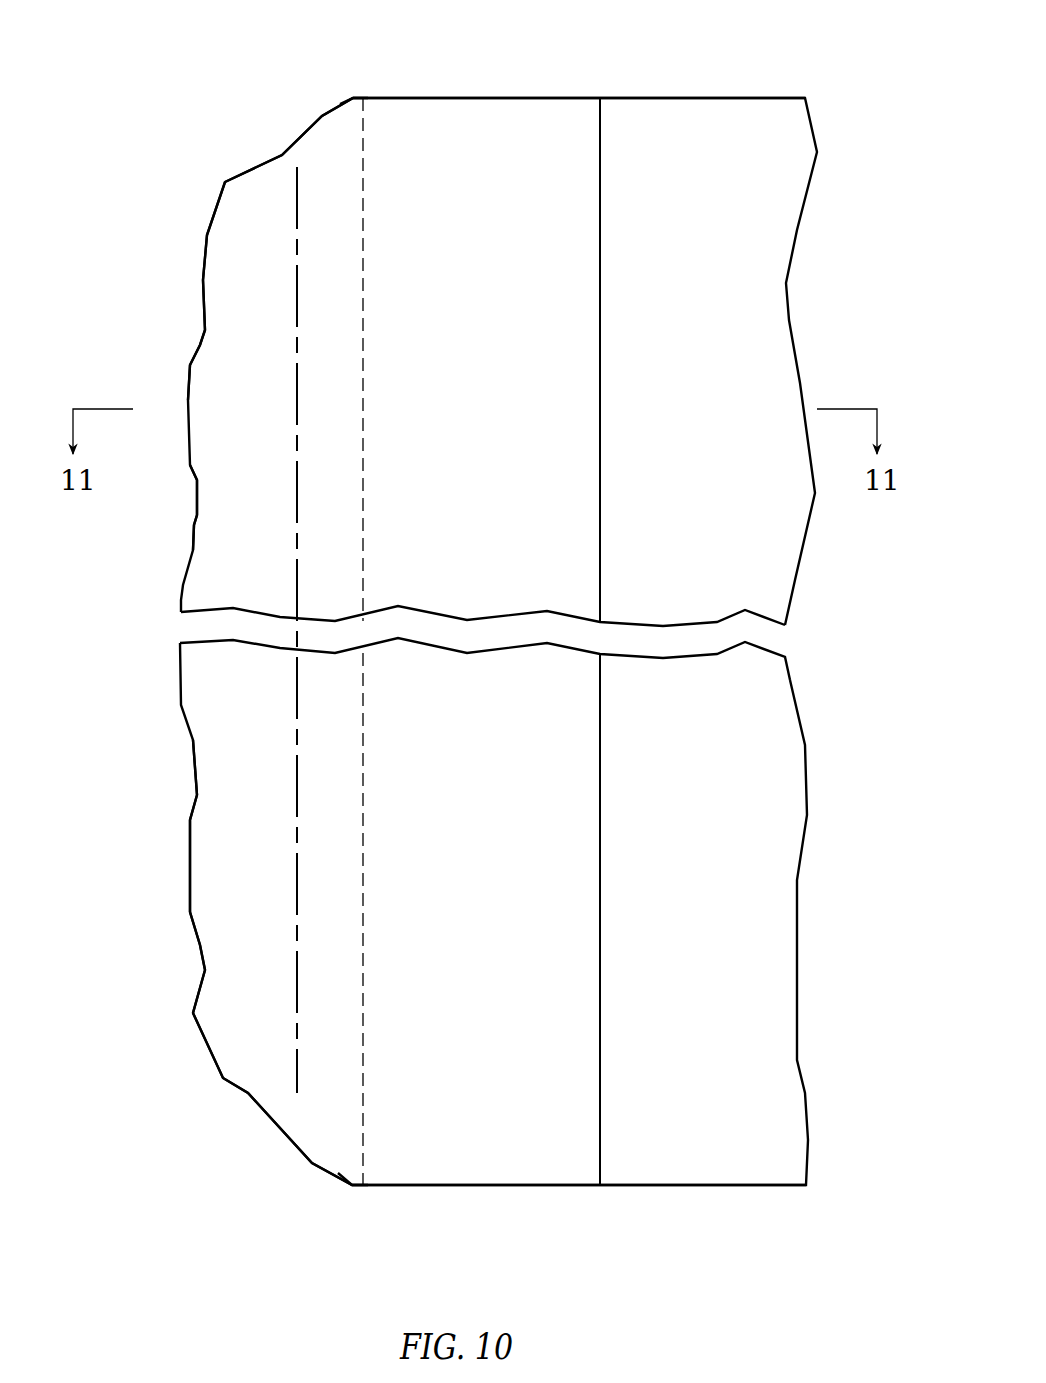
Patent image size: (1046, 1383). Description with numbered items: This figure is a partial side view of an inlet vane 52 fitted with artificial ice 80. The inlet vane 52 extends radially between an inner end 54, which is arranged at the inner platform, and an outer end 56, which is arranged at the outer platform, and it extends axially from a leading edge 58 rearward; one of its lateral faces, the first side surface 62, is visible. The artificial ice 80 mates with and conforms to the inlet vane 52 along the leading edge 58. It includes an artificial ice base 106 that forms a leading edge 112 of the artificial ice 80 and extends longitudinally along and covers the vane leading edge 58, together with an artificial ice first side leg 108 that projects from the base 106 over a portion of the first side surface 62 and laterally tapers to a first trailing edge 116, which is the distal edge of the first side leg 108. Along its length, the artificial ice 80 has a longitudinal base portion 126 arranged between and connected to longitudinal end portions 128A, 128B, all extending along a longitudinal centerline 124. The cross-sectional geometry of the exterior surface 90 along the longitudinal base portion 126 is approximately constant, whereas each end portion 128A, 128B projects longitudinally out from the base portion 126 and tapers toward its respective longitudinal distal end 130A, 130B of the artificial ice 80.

The inlet vane 52 is at (798, 86).
The inner end 54 is at (692, 1186).
The outer end 56 is at (702, 97).
The leading edge 58 is at (363, 1038).
The first side surface 62 is at (757, 878).
The artificial ice 80 is at (250, 142).
The exterior surface 90 is at (190, 832).
The artificial ice base 106 is at (270, 829).
The artificial ice first side leg 108 is at (487, 866).
The leading edge of the artificial ice 112 is at (193, 522).
The first trailing edge 116 is at (601, 1033).
The longitudinal centerline 124 is at (296, 1079).
The longitudinal base portion 126 is at (151, 932).
The longitudinal end portion 128A is at (201, 210).
The longitudinal end portion 128B is at (208, 1087).
The longitudinal distal end 130A is at (353, 97).
The longitudinal distal end 130B is at (353, 1186).